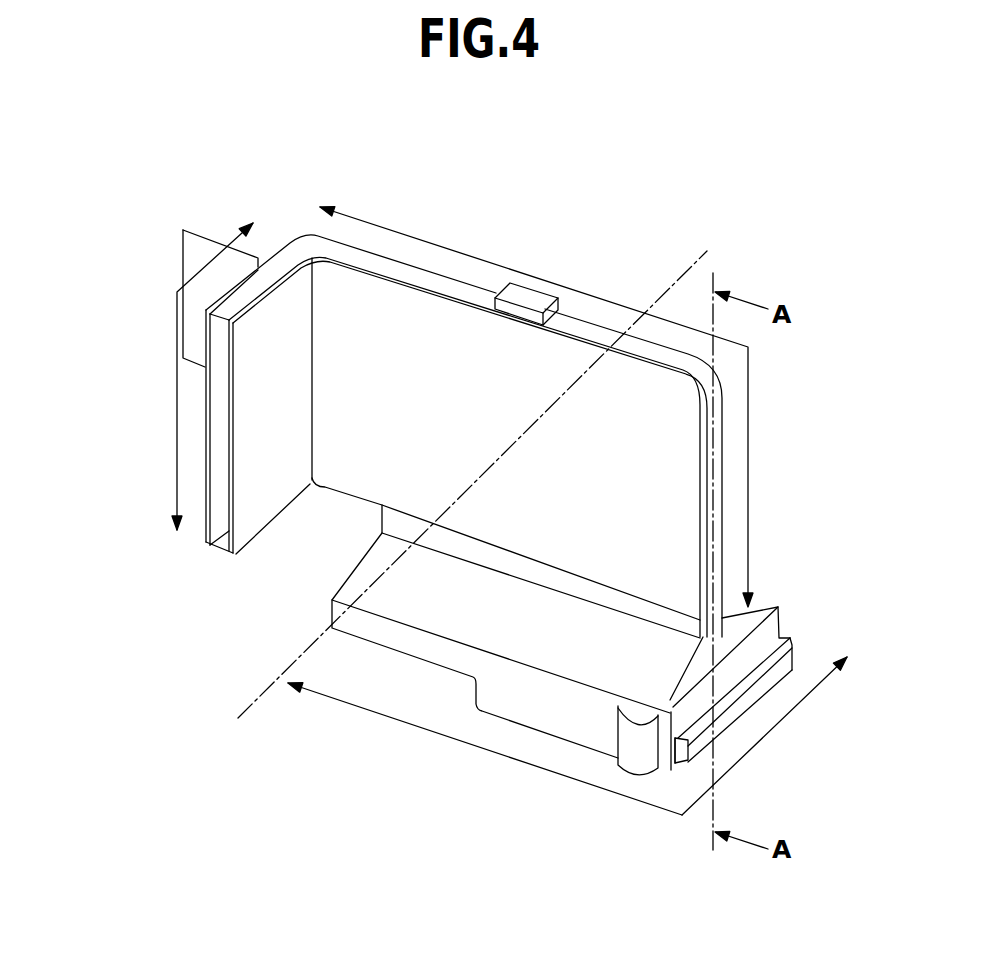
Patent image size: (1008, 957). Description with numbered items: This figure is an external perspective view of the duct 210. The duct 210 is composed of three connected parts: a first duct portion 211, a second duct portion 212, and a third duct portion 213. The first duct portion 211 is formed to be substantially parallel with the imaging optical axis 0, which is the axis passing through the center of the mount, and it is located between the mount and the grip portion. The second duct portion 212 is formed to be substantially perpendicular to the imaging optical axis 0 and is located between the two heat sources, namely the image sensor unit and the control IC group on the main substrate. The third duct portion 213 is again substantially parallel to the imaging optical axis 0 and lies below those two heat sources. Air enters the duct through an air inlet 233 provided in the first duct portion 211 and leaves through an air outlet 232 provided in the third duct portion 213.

The duct 210 is at (530, 208).
The first duct portion 211 is at (175, 382).
The second duct portion 212 is at (592, 294).
The third duct portion 213 is at (458, 743).
The air outlet 232 is at (753, 690).
The air inlet 233 is at (218, 423).
The imaging optical axis 0 is at (260, 686).